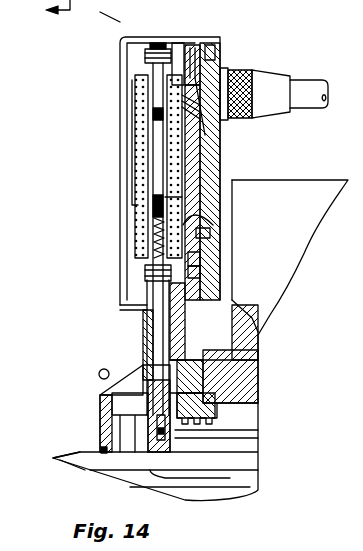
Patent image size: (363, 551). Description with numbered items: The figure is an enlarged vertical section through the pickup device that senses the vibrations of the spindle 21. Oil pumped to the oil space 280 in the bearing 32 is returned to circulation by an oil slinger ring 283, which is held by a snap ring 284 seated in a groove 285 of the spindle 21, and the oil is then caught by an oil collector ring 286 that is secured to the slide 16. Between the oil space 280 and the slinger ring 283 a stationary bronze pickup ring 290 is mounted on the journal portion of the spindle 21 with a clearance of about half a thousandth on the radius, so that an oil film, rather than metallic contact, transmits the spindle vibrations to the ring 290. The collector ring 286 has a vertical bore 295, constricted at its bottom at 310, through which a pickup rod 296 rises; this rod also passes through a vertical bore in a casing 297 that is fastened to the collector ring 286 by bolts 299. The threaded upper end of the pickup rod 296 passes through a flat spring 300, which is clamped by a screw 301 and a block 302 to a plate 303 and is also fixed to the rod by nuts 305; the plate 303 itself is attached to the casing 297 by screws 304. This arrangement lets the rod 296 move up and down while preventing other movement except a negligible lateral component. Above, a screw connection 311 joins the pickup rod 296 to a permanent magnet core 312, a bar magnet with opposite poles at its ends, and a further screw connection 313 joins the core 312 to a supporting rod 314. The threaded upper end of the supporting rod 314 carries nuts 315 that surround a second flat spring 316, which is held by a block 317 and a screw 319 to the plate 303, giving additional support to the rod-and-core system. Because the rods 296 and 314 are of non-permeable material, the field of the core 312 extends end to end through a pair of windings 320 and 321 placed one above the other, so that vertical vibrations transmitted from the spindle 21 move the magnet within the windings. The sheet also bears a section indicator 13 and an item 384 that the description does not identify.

The section line arrow 13 is at (69, 19).
The housing extension 384 is at (125, 11).
The casing 297 is at (222, 141).
The plate 303 is at (200, 156).
The screw 319 is at (203, 38).
The flat spring 316 is at (176, 38).
The block 317 is at (216, 52).
The nuts 315 is at (146, 59).
The supporting rod 314 is at (158, 80).
The winding 320 is at (140, 108).
The permanent magnet core 312 is at (168, 168).
The screw connection 313 is at (150, 132).
The winding 321 is at (150, 238).
The screw connection 311 is at (188, 196).
The flat spring 300 is at (180, 217).
The screws 304 is at (188, 232).
The slide 16 is at (300, 254).
The screw 301 is at (188, 258).
The block 302 is at (186, 283).
The nuts 305 is at (146, 277).
The bolts 299 is at (222, 338).
The pickup rod 296 is at (162, 338).
The vertical bore 295 is at (150, 352).
The oil collector ring 286 is at (98, 375).
The bearing 32 is at (240, 406).
The oil slinger ring 283 is at (100, 427).
The oil space 280 is at (245, 433).
The snap ring 284 is at (93, 449).
The spindle 21 is at (248, 452).
The groove 285 is at (85, 464).
The constriction 310 is at (152, 453).
The pickup ring 290 is at (190, 479).